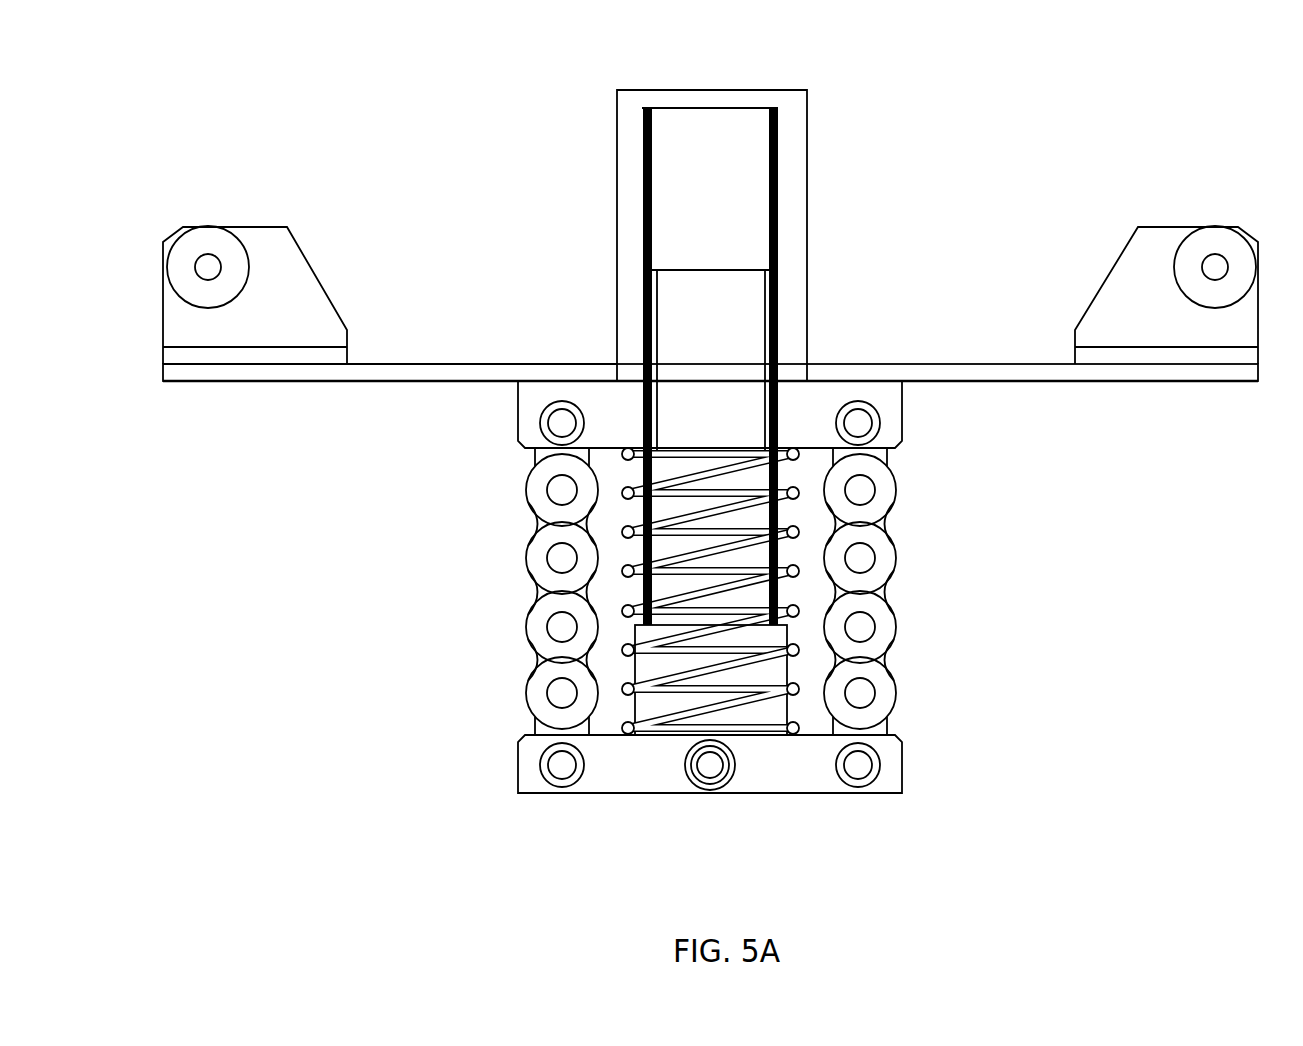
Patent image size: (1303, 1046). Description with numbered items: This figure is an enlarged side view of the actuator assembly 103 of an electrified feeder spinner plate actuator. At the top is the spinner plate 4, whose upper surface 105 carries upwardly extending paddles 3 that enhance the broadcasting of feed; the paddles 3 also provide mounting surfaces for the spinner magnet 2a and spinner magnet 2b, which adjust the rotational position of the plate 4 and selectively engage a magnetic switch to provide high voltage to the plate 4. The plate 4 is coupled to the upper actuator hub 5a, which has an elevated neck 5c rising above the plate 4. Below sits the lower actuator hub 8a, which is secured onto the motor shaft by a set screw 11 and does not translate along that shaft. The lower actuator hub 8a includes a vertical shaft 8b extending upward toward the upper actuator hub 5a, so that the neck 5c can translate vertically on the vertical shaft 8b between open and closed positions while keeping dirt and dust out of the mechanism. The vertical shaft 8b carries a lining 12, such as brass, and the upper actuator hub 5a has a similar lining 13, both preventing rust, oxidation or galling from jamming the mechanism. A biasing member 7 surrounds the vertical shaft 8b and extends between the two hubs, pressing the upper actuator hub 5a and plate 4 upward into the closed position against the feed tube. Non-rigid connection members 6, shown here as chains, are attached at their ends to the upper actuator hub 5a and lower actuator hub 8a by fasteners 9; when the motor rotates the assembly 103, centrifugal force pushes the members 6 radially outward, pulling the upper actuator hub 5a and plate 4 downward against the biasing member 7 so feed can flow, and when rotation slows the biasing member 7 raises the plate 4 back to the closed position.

The actuator assembly 103 is at (262, 75).
The spinner magnet 2a is at (235, 230).
The spinner magnet 2b is at (1197, 225).
The paddles 3 is at (318, 277).
The spinner plate 4 is at (1060, 363).
The upper surface 105 is at (500, 360).
The elevated neck 5c is at (792, 91).
The upper actuator hub 5a is at (888, 452).
The lower actuator hub 8a is at (903, 797).
The vertical shaft 8b is at (719, 331).
The connection members 6 is at (527, 480).
The fasteners 9 is at (550, 424).
The set screw 11 is at (706, 769).
The lining 13 is at (631, 474).
The lining 12 is at (631, 594).
The biasing member 7 is at (795, 690).